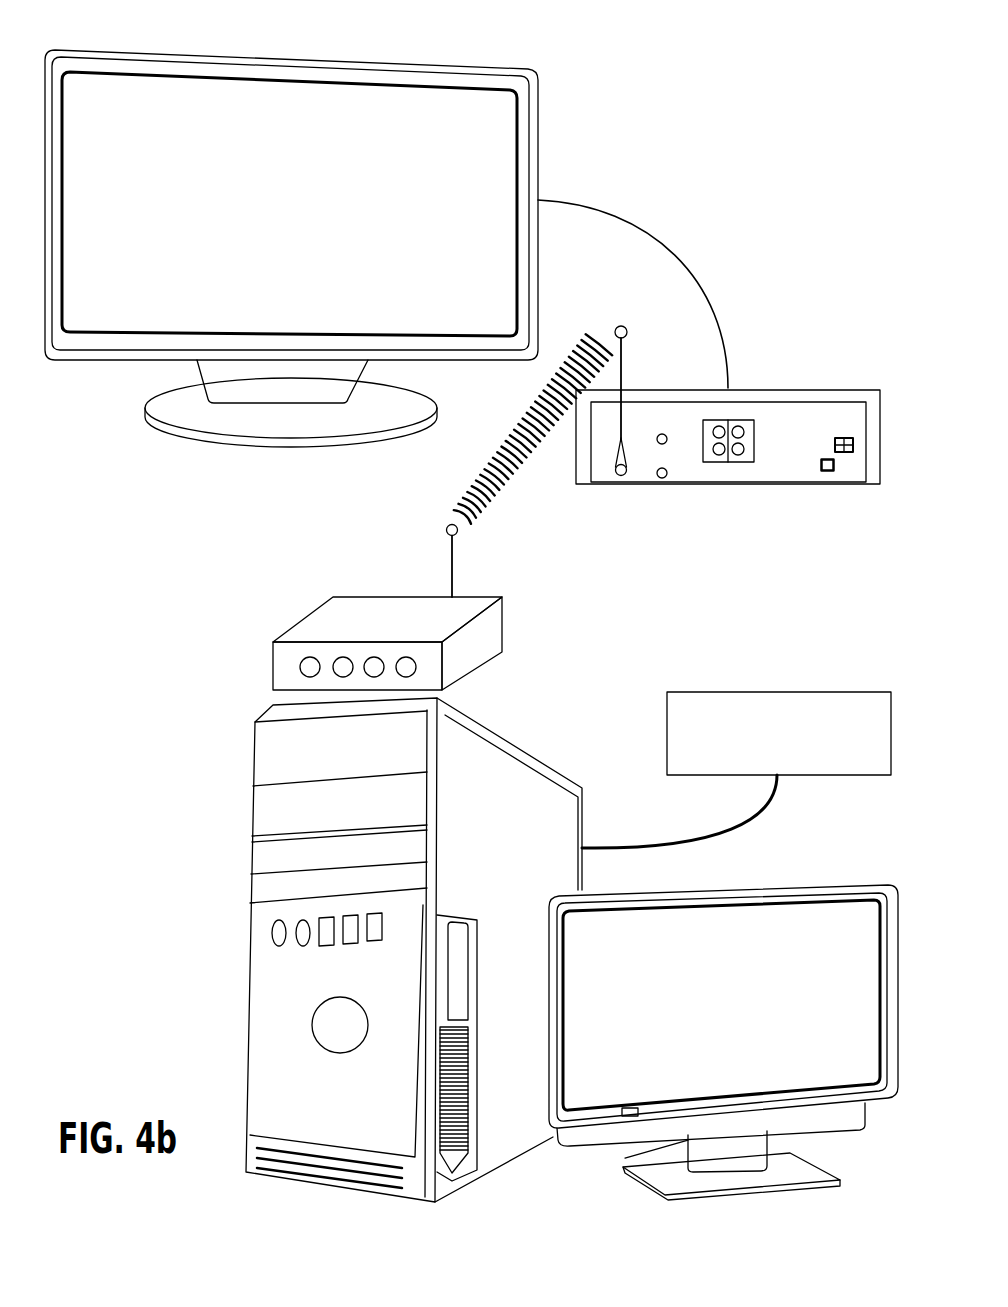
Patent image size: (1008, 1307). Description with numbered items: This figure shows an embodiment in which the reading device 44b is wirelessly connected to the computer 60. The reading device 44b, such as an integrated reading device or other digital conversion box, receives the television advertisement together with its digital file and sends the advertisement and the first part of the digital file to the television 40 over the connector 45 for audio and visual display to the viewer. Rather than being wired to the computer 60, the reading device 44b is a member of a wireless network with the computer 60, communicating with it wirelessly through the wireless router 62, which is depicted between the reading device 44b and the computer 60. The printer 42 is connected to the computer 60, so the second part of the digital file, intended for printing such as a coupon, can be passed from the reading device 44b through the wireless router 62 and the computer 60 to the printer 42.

The television 40 is at (290, 50).
The connector 45 is at (716, 273).
The reading device 44b is at (813, 390).
The wireless router 62 is at (359, 597).
The computer 60 is at (178, 765).
The printer 42 is at (826, 692).